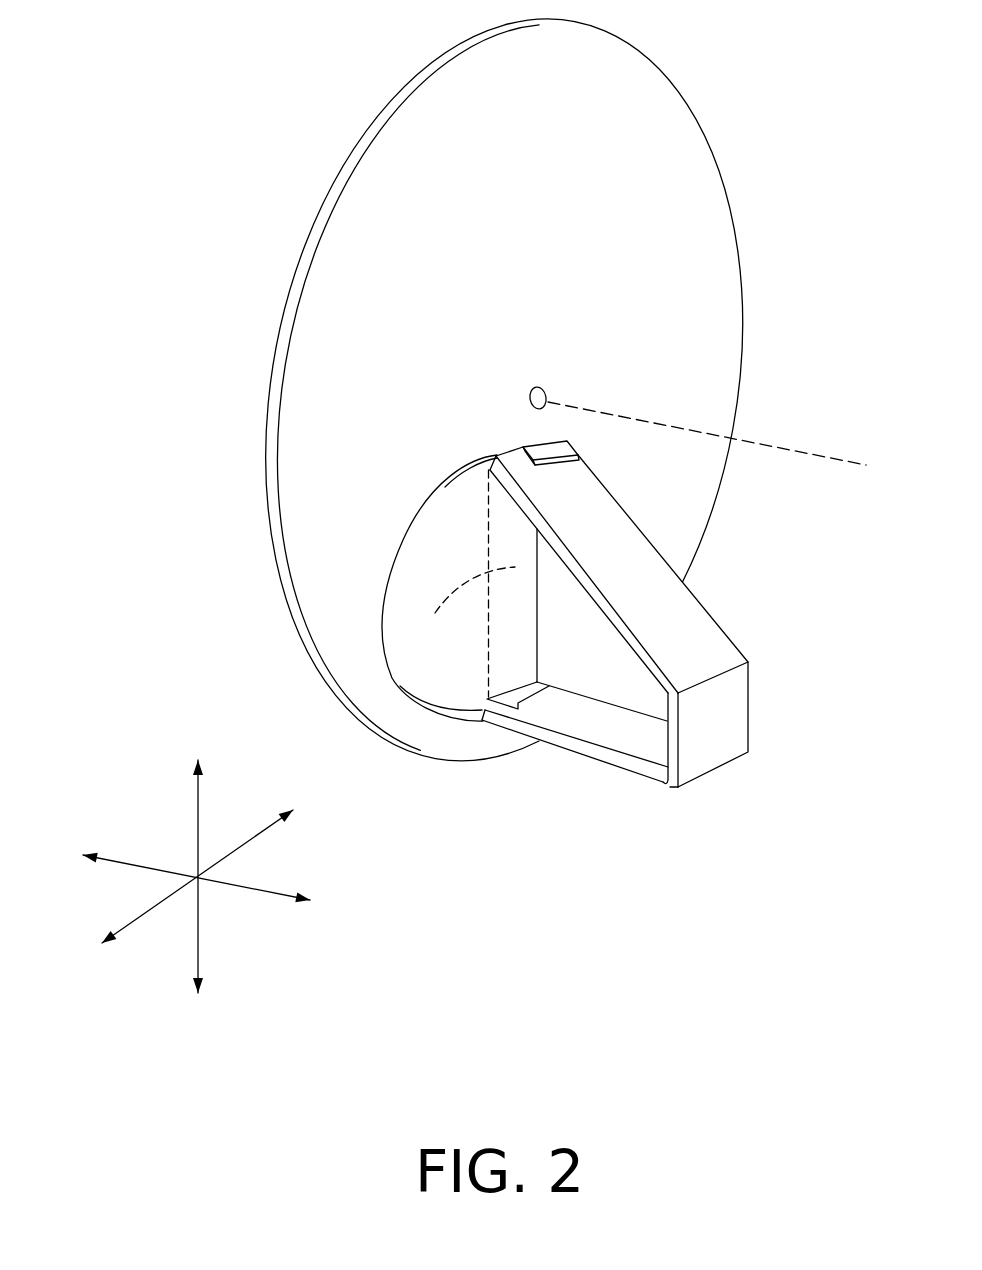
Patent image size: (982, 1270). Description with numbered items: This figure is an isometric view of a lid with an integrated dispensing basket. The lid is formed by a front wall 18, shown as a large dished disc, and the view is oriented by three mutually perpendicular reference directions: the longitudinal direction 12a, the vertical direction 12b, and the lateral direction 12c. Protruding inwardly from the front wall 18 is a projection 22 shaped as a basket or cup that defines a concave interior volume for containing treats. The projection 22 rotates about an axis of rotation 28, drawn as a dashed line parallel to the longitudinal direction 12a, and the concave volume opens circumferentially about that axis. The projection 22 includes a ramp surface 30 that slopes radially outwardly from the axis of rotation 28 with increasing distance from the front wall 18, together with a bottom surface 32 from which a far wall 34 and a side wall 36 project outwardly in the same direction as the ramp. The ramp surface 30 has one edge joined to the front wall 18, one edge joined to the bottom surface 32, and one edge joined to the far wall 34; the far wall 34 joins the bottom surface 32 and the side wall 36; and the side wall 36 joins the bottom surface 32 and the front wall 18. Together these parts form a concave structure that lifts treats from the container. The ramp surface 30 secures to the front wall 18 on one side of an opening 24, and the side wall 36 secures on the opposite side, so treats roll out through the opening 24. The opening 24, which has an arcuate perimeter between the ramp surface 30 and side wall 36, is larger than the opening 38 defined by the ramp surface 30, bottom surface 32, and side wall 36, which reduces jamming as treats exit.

The longitudinal direction 12a is at (133, 857).
The vertical direction 12b is at (200, 795).
The lateral direction 12c is at (137, 917).
The front wall 18 is at (362, 478).
The projection 22 is at (659, 656).
The opening 24 is at (412, 588).
The axis of rotation 28 is at (778, 445).
The ramp surface 30 is at (578, 591).
The bottom surface 32 is at (611, 656).
The far wall 34 is at (665, 729).
The side wall 36 is at (602, 728).
The opening defined by ramp surface, bottom surface, and side wall 38 is at (467, 606).